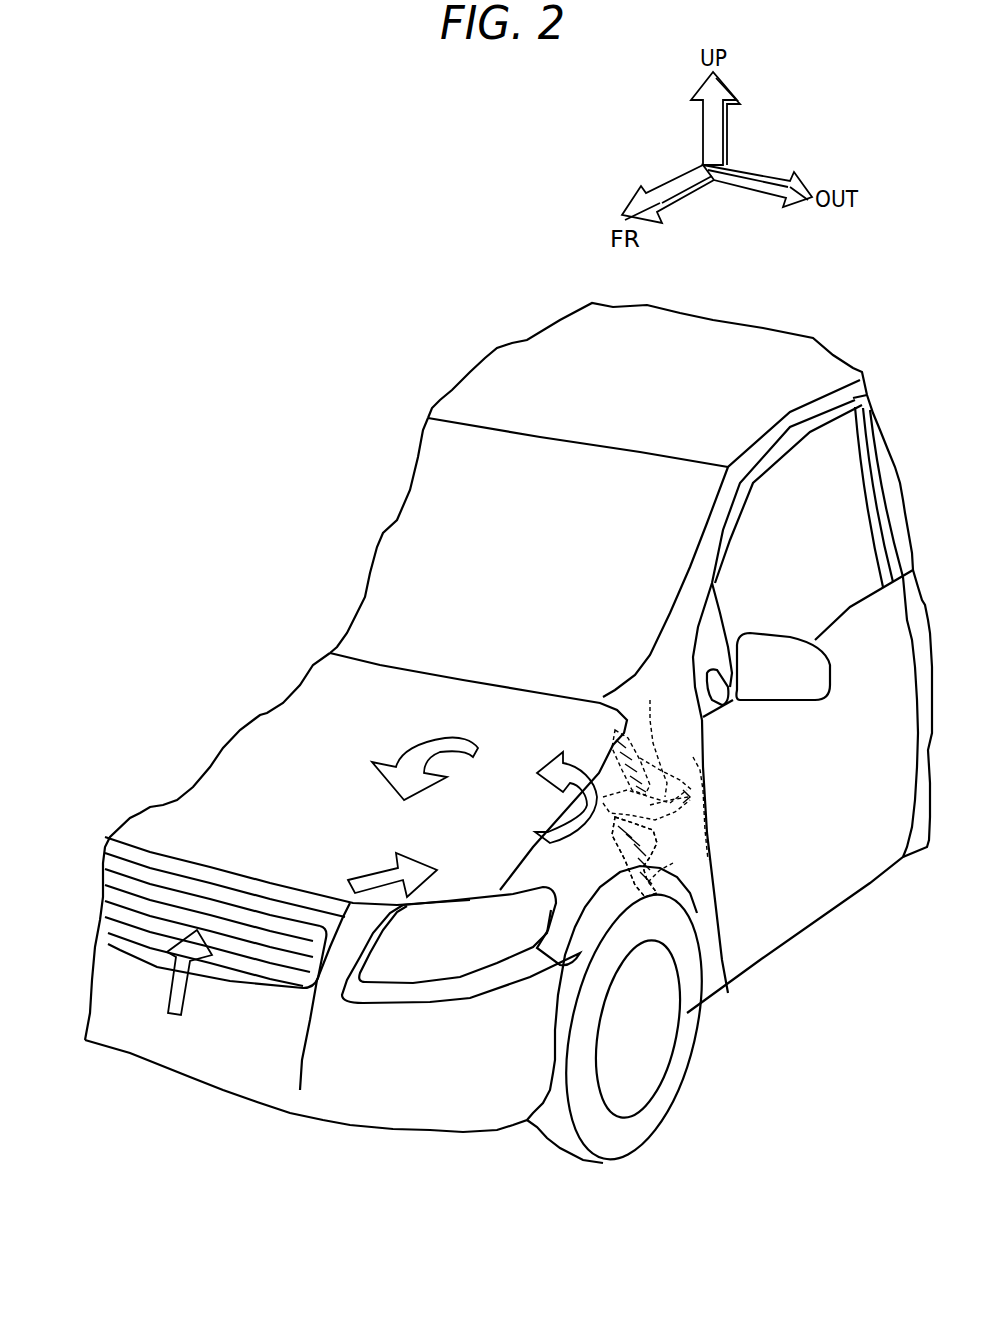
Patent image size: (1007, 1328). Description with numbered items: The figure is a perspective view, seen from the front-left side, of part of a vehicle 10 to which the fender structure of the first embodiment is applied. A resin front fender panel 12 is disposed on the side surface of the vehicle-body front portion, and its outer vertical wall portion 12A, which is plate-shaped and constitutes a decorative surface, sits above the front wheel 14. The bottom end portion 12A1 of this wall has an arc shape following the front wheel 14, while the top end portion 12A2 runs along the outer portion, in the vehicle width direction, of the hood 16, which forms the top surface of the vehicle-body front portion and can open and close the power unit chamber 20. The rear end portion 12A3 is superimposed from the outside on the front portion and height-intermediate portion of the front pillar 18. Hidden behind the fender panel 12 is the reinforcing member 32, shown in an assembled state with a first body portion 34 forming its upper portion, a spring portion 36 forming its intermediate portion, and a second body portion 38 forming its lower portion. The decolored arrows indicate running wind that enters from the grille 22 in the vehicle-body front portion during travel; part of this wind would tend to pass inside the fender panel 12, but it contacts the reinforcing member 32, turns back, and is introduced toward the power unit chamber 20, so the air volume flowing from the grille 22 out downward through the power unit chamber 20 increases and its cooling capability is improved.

The vehicle 10 is at (862, 1187).
The front fender panel 12 is at (732, 857).
The outer vertical wall portion 12A is at (688, 843).
The bottom end portion 12A1 is at (640, 897).
The top end portion 12A2 is at (603, 803).
The rear end portion 12A3 is at (703, 753).
The front wheel 14 is at (623, 1137).
The hood 16 is at (247, 753).
The front pillar 18 is at (703, 567).
The power unit chamber 20 is at (308, 737).
The grille 22 is at (147, 932).
The reinforcing member 32 is at (690, 790).
The first body portion 34 is at (650, 700).
The spring portion 36 is at (690, 800).
The second body portion 38 is at (673, 863).